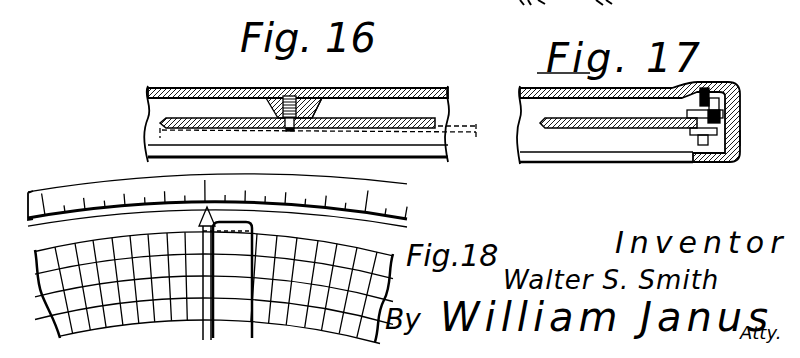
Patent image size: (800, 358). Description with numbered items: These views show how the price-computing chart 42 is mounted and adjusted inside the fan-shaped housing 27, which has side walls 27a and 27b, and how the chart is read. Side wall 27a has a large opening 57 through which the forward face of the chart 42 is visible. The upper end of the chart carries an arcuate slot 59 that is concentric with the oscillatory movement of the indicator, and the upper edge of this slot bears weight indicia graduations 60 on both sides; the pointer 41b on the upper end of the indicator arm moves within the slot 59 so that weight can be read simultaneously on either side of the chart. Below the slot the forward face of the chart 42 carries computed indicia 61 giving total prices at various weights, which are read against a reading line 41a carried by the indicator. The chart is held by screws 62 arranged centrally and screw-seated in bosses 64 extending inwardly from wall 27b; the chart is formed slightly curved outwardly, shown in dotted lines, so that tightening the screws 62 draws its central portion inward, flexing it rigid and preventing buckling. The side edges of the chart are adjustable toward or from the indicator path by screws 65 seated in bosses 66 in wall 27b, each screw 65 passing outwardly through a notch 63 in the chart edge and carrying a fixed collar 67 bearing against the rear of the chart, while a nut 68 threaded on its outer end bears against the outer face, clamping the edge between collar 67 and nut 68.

In FIG. 16, the fan-shaped housing 27 is at (369, 155).
In FIG. 17, the fan-shaped housing 27 is at (517, 159).
In FIG. 16, the side wall 27a is at (220, 149).
In FIG. 17, the side wall 27a is at (710, 165).
In FIG. 16, the side wall 27b is at (176, 88).
In FIG. 17, the side wall 27b is at (524, 88).
In FIG. 16, the chart 42 is at (168, 126).
In FIG. 17, the chart 42 is at (562, 130).
In FIG. 18, the chart 42 is at (419, 206).
In FIG. 17, the large opening 57 is at (625, 161).
In FIG. 18, the arcuate slot 59 is at (98, 211).
In FIG. 18, the weight indicia graduations 60 is at (271, 278).
In FIG. 18, the indicia 61 is at (62, 330).
In FIG. 16, the screws 62 is at (242, 98).
In FIG. 17, the notches 63 is at (725, 128).
In FIG. 16, the bosses 64 is at (332, 100).
In FIG. 17, the screws 65 is at (712, 100).
In FIG. 17, the bosses 66 is at (690, 88).
In FIG. 17, the fixed collar or annular projection 67 is at (732, 110).
In FIG. 17, the nut 68 is at (742, 137).
In FIG. 18, the reading line 41a is at (196, 339).
In FIG. 18, the pointer 41b is at (197, 218).